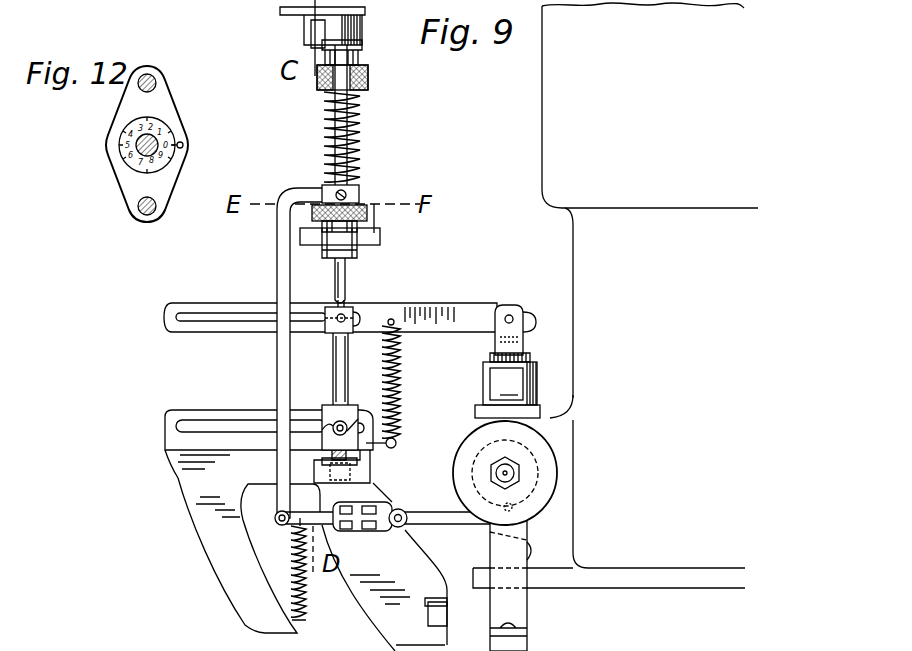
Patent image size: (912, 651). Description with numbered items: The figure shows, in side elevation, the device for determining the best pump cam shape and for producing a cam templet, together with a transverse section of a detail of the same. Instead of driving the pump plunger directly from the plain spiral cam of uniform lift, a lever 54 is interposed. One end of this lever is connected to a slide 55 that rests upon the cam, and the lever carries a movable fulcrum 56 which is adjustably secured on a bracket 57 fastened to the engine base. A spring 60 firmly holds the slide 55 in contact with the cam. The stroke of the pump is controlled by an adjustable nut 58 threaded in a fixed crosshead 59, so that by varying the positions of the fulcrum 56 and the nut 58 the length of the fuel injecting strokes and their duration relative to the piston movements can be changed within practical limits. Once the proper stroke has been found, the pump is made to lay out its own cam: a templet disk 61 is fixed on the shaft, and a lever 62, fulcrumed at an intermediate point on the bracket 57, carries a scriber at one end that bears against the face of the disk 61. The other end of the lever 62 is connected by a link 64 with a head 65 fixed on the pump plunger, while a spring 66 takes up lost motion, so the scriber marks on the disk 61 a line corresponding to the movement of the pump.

The lever 54 is at (443, 315).
The slide 55 is at (518, 343).
The movable fulcrum 56 is at (335, 367).
The bracket 57 is at (210, 540).
The adjustable nut 58 is at (364, 212).
The fixed crosshead 59 is at (363, 238).
The spring 60 is at (400, 386).
The templet disk 61 is at (543, 473).
The lever 62 is at (418, 512).
The link 64 is at (280, 355).
The head 65 is at (355, 197).
The spring 66 is at (307, 590).